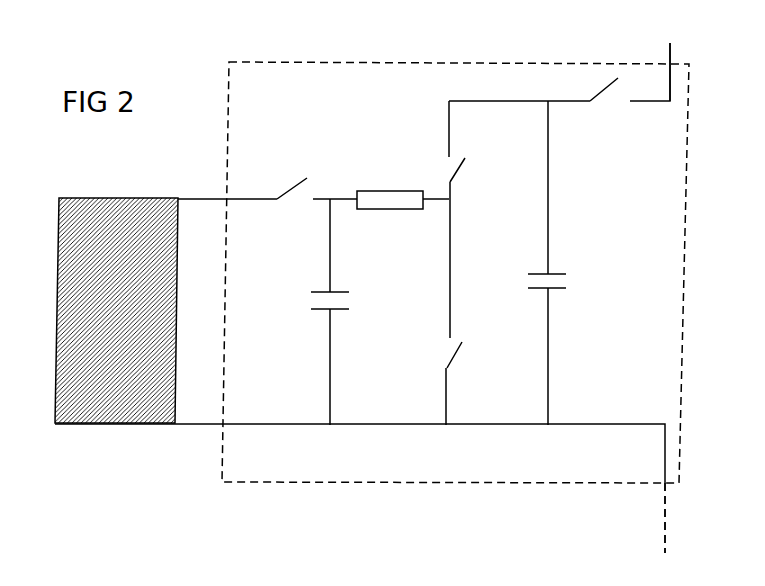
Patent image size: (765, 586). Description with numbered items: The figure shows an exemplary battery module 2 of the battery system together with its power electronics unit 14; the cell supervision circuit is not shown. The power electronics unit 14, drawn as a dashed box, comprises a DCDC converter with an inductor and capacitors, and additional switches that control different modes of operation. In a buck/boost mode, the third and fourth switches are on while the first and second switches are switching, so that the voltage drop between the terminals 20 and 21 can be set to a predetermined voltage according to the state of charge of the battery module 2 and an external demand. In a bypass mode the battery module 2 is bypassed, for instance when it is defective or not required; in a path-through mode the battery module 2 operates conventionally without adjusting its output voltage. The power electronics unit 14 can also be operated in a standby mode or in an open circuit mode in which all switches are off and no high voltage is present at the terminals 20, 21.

The battery module 2 is at (80, 425).
The power electronics unit 14 is at (398, 483).
The terminal 20 is at (672, 43).
The terminal 21 is at (663, 543).